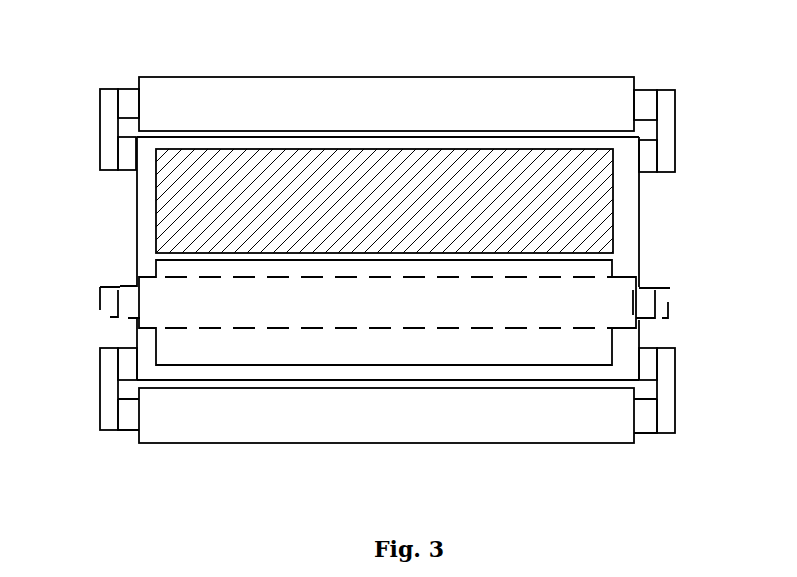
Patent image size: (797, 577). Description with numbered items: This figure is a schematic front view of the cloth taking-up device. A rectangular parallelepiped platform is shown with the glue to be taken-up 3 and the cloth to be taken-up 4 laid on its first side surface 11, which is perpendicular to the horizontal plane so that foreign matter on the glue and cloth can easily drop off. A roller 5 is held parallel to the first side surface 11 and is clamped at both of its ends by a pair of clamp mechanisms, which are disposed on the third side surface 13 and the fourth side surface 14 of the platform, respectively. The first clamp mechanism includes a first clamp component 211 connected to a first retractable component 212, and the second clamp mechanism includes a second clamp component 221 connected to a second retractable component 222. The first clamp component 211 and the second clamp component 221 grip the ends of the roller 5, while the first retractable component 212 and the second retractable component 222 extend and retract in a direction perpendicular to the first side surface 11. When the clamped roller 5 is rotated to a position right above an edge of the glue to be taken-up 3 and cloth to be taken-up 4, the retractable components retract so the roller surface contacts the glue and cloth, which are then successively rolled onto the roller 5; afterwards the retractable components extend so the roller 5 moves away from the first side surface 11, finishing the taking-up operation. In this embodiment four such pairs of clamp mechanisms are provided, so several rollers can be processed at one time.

The glue to be taken-up 3 is at (433, 340).
The cloth to be taken-up 4 is at (405, 183).
The roller 5 is at (305, 413).
The first side surface 11 is at (622, 233).
The third side surface 13 is at (135, 225).
The fourth side surface 14 is at (639, 252).
The first clamp component 211 is at (131, 103).
The first retractable component 212 is at (110, 133).
The second clamp component 221 is at (642, 110).
The second retractable component 222 is at (665, 133).